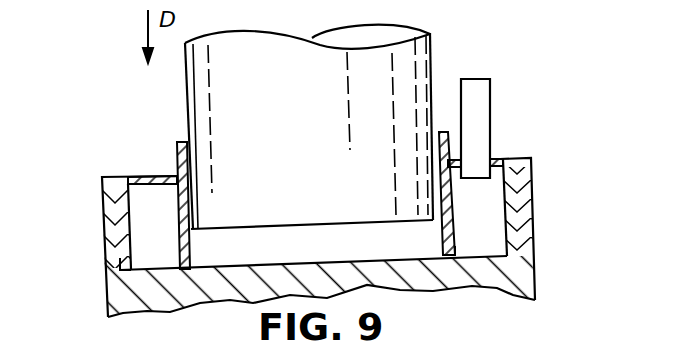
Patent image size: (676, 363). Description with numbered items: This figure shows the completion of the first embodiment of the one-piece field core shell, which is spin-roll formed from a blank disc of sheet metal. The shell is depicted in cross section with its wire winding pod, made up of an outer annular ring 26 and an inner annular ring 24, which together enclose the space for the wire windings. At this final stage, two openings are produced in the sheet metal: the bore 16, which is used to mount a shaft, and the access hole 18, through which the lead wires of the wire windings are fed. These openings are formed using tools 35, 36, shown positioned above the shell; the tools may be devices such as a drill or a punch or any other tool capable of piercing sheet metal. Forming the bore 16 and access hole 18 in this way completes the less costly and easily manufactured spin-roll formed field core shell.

The bore 16 is at (267, 247).
The access hole 18 is at (495, 189).
The inner annular ring 24 is at (183, 271).
The outer annular ring 26 is at (125, 270).
The tool 35 is at (410, 72).
The tool 36 is at (480, 106).